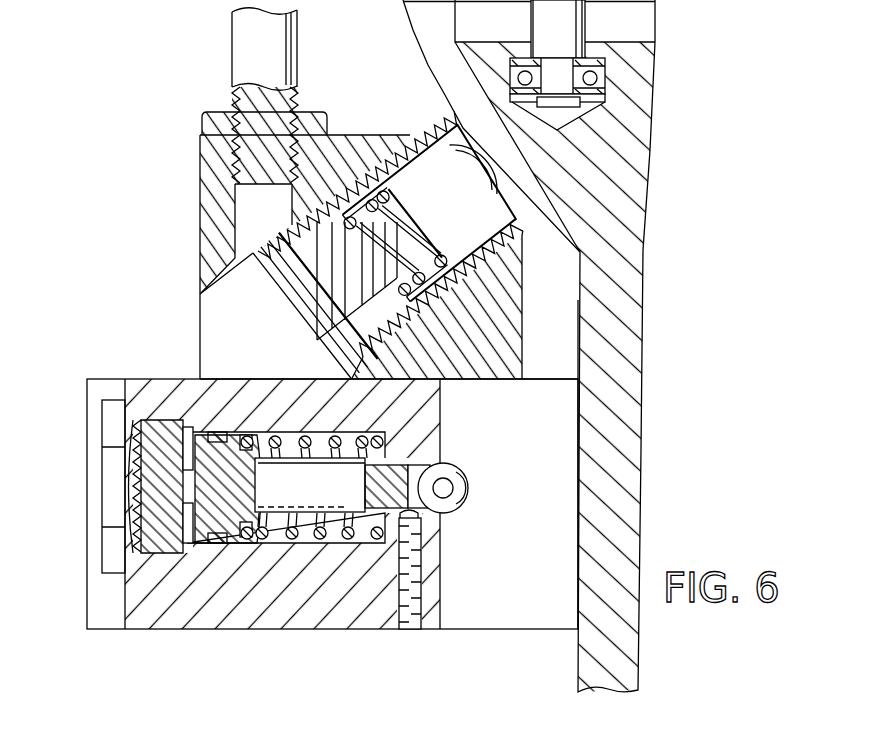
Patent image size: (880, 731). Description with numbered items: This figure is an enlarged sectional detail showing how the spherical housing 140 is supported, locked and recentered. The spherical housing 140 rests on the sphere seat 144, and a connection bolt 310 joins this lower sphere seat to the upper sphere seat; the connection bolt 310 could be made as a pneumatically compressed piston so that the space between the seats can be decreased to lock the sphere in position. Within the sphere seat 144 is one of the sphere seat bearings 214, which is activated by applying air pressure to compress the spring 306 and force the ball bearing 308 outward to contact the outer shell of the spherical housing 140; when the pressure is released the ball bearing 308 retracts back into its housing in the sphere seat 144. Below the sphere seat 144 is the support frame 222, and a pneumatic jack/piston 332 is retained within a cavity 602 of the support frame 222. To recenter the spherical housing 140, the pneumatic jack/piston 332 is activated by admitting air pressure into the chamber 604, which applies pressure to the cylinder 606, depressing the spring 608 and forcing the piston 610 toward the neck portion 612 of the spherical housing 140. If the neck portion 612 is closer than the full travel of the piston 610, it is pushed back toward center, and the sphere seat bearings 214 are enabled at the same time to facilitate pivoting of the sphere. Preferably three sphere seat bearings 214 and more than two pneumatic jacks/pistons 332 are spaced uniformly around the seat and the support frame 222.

The spherical housing 140 is at (605, 212).
The sphere seat 144 is at (213, 218).
The connection bolt 310 is at (248, 50).
The spring 306 is at (375, 258).
The sphere seat bearing 214 is at (425, 175).
The ball bearing 308 is at (480, 172).
The support frame 222 is at (213, 607).
The cavity 602 is at (330, 563).
The chamber 604 is at (148, 480).
The cylinder 606 is at (202, 488).
The spring 608 is at (358, 427).
The piston 610 is at (393, 467).
The neck portion 612 is at (588, 478).
The pneumatic jack/piston 332 is at (413, 517).